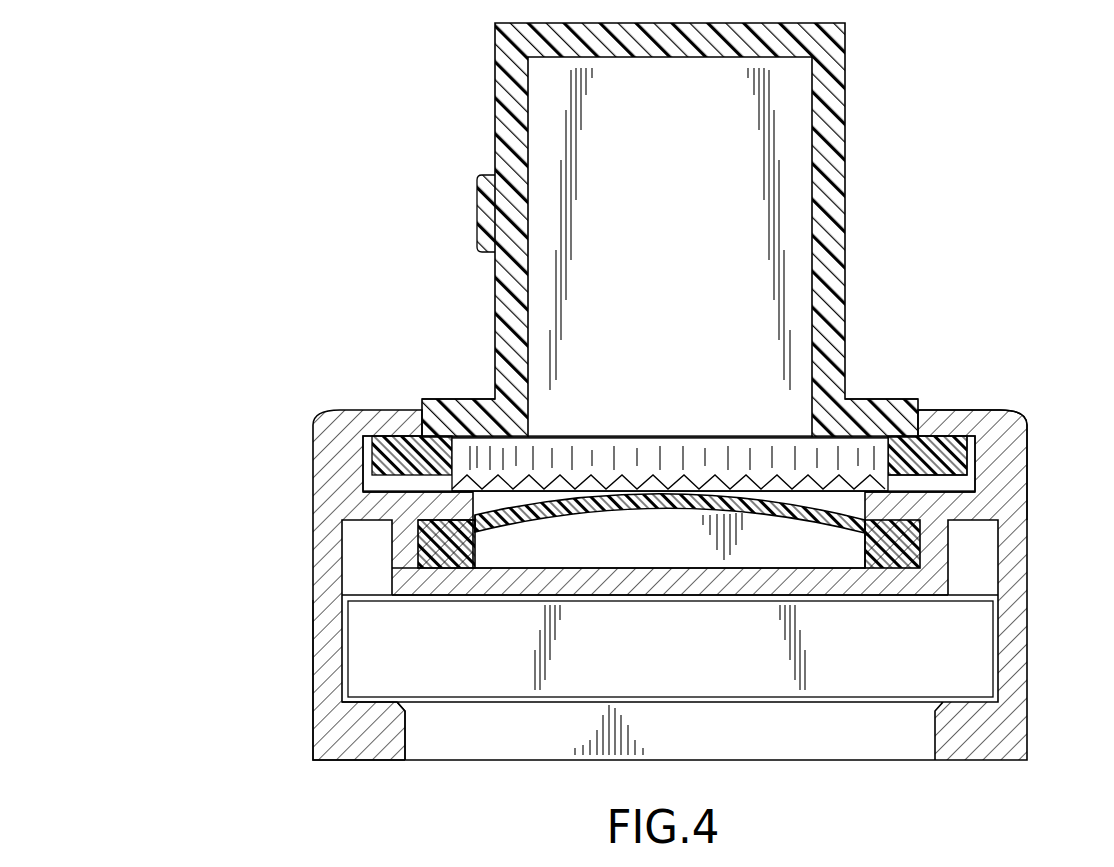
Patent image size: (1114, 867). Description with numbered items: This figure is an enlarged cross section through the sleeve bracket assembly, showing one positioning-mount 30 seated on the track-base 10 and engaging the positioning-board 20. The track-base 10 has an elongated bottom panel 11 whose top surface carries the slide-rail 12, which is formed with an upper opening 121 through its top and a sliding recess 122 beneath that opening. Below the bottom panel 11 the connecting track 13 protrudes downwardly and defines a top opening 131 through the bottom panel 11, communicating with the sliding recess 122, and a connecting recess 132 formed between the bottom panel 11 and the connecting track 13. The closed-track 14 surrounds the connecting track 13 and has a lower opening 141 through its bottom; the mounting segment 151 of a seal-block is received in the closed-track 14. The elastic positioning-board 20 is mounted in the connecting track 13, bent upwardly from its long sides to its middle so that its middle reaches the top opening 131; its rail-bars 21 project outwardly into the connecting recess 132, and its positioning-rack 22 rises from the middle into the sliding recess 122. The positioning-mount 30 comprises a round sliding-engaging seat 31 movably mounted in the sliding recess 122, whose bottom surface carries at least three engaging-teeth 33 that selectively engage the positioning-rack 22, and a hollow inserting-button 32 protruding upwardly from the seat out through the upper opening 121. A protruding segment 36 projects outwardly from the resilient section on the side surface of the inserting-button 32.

The track-base 10 is at (258, 646).
The bottom panel 11 is at (952, 504).
The slide-rail 12 is at (958, 401).
The connecting track 13 is at (729, 598).
The closed-track 14 is at (358, 764).
The lower opening 141 is at (407, 722).
The mounting segment 151 is at (978, 648).
The sliding recess 122 is at (363, 468).
The upper opening 121 is at (909, 424).
The positioning-board 20 is at (782, 504).
The engaging-teeth 33 is at (722, 498).
The rail-bars 21 is at (466, 560).
The connecting recess 132 is at (442, 532).
The positioning-rack 22 is at (668, 488).
The top opening 131 is at (482, 508).
The positioning-mount 30 is at (708, 230).
The inserting-button 32 is at (852, 253).
The sliding-engaging seat 31 is at (468, 392).
The protruding segment 36 is at (482, 217).